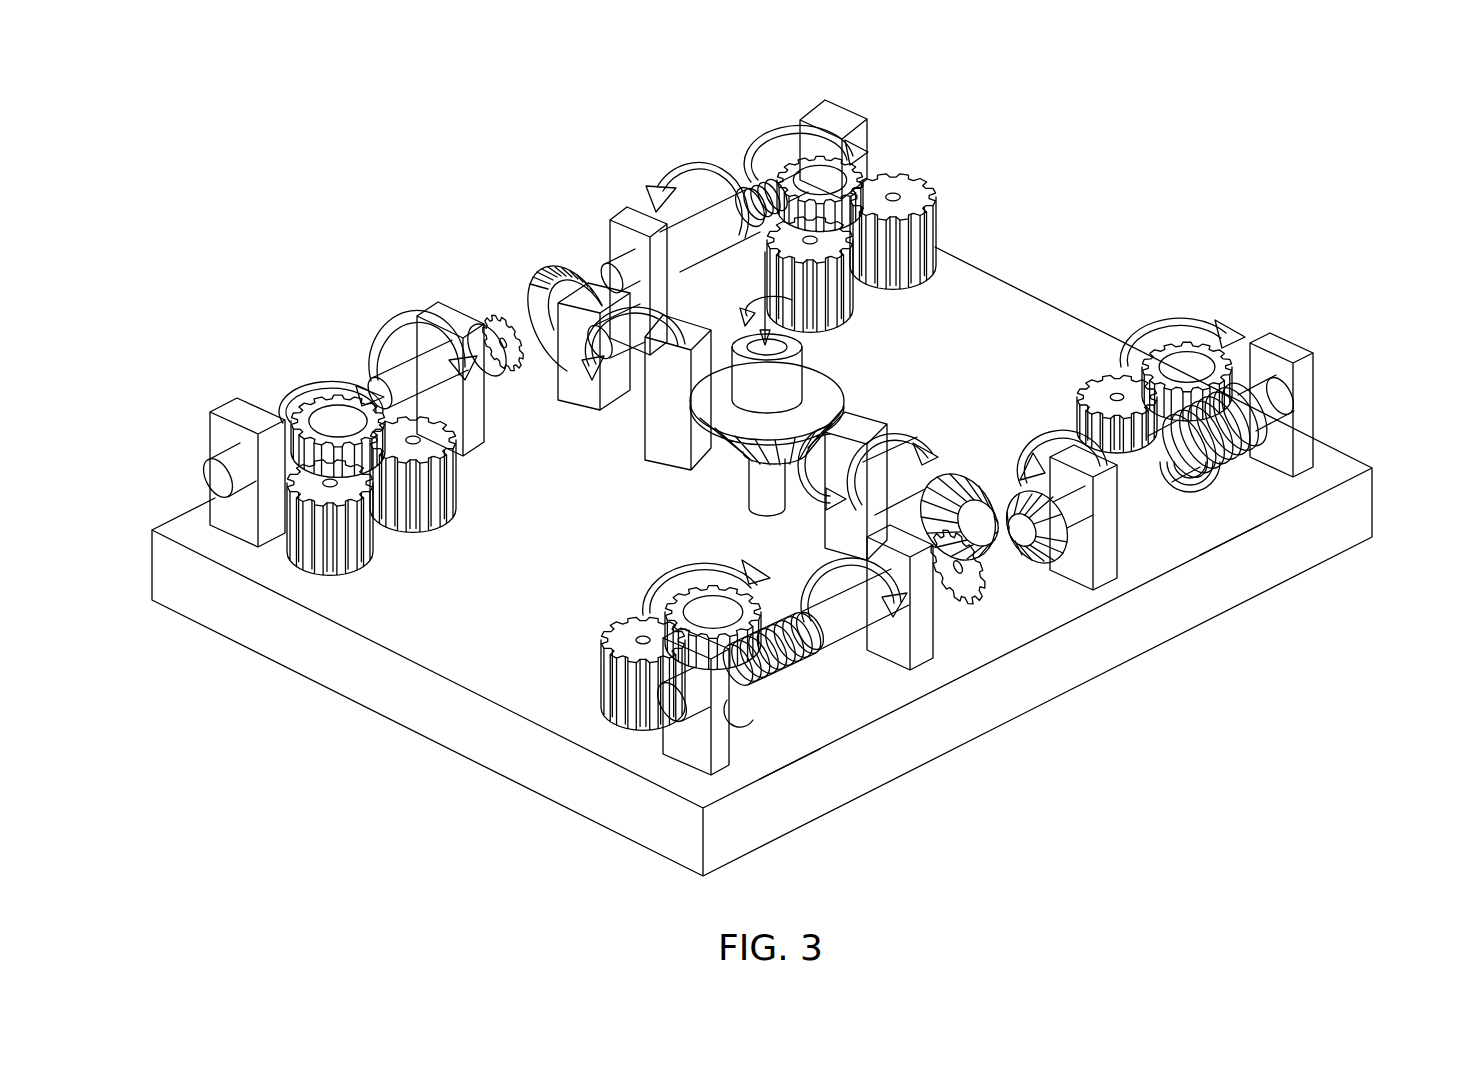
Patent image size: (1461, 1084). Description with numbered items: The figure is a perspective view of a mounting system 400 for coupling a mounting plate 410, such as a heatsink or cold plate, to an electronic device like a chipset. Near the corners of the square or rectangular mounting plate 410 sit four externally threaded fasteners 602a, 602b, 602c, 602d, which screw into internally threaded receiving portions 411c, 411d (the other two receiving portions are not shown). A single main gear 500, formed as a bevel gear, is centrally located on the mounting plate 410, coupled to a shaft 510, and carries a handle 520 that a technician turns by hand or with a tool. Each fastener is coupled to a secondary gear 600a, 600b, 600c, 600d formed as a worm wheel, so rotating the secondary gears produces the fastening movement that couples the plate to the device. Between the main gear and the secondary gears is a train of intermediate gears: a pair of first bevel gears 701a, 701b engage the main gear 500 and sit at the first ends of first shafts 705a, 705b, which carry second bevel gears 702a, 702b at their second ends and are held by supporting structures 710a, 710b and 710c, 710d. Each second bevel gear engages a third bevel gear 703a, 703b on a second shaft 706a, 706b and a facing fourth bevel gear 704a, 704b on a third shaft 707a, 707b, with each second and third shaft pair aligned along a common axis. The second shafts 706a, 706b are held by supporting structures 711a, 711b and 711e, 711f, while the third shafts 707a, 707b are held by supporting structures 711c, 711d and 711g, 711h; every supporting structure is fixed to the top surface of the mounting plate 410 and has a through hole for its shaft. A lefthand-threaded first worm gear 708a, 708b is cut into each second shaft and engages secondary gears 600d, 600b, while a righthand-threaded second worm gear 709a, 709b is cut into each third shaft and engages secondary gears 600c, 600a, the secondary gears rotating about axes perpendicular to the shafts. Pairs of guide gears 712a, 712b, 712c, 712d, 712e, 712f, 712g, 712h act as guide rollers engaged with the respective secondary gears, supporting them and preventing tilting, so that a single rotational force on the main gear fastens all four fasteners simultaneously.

The mounting system 400 is at (262, 122).
The mounting plate 410 is at (393, 707).
The receiving portion 411c is at (735, 722).
The receiving portion 411d is at (1280, 520).
The main gear 500 is at (722, 495).
The shaft 510 is at (748, 470).
The handle 520 is at (805, 345).
The secondary gear 600a is at (790, 147).
The secondary gear 600b is at (309, 396).
The secondary gear 600c is at (665, 615).
The secondary gear 600d is at (1170, 340).
The fastener 602a is at (805, 158).
The fastener 602b is at (338, 398).
The fastener 602c is at (742, 722).
The fastener 602d is at (1245, 470).
The first bevel gear 701a is at (820, 466).
The first bevel gear 701b is at (662, 462).
The second bevel gear 702a is at (1022, 492).
The second bevel gear 702b is at (544, 278).
The third bevel gear 703a is at (1000, 600).
The third bevel gear 703b is at (500, 312).
The fourth bevel gear 704a is at (965, 590).
The fourth bevel gear 704b is at (562, 266).
The first shaft 705a is at (893, 477).
The first shaft 705b is at (600, 400).
The second shaft 706a is at (1185, 500).
The second shaft 706b is at (393, 340).
The third shaft 707a is at (830, 652).
The third shaft 707b is at (673, 185).
The first worm gear 708a is at (1300, 480).
The first worm gear 708b is at (285, 418).
The second worm gear 709a is at (800, 682).
The second worm gear 709b is at (757, 188).
The supporting structure 710a is at (960, 452).
The supporting structure 710b is at (848, 440).
The supporting structure 710c is at (628, 430).
The supporting structure 710d is at (540, 400).
The supporting structure 711a is at (1300, 342).
The supporting structure 711b is at (1070, 448).
The supporting structure 711c is at (920, 662).
The supporting structure 711d is at (680, 800).
The supporting structure 711e is at (215, 405).
The supporting structure 711f is at (433, 303).
The supporting structure 711g is at (612, 210).
The supporting structure 711h is at (827, 110).
The guide gear 712a is at (1240, 335).
The guide gear 712b is at (1120, 375).
The guide gear 712c is at (685, 578).
The guide gear 712d is at (622, 737).
The guide gear 712e is at (288, 578).
The guide gear 712f is at (405, 534).
The guide gear 712g is at (855, 305).
The guide gear 712h is at (907, 192).